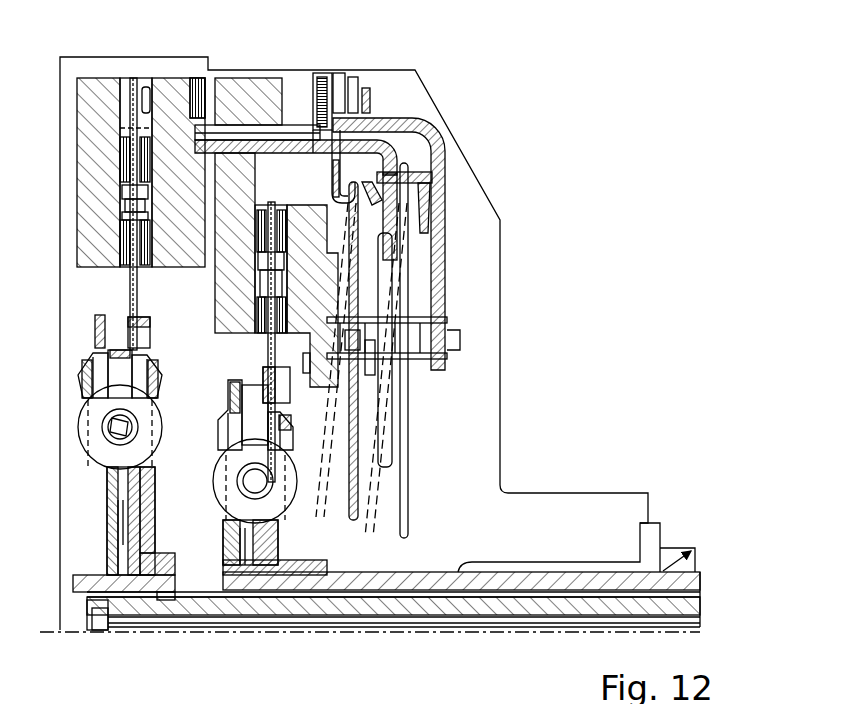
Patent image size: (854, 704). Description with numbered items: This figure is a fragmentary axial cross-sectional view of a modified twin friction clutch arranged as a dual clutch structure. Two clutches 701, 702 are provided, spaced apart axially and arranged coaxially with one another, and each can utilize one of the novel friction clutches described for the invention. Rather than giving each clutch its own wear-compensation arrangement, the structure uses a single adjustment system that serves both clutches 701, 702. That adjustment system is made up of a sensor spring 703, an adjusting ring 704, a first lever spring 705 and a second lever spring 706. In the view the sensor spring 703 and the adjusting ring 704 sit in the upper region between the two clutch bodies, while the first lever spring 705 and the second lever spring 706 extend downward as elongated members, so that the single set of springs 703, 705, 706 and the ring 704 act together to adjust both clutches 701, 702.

The clutch 701 is at (105, 96).
The clutch 702 is at (235, 177).
The sensor spring 703 is at (340, 175).
The adjusting ring 704 is at (443, 182).
The first lever spring 705 is at (403, 502).
The second lever spring 706 is at (350, 482).